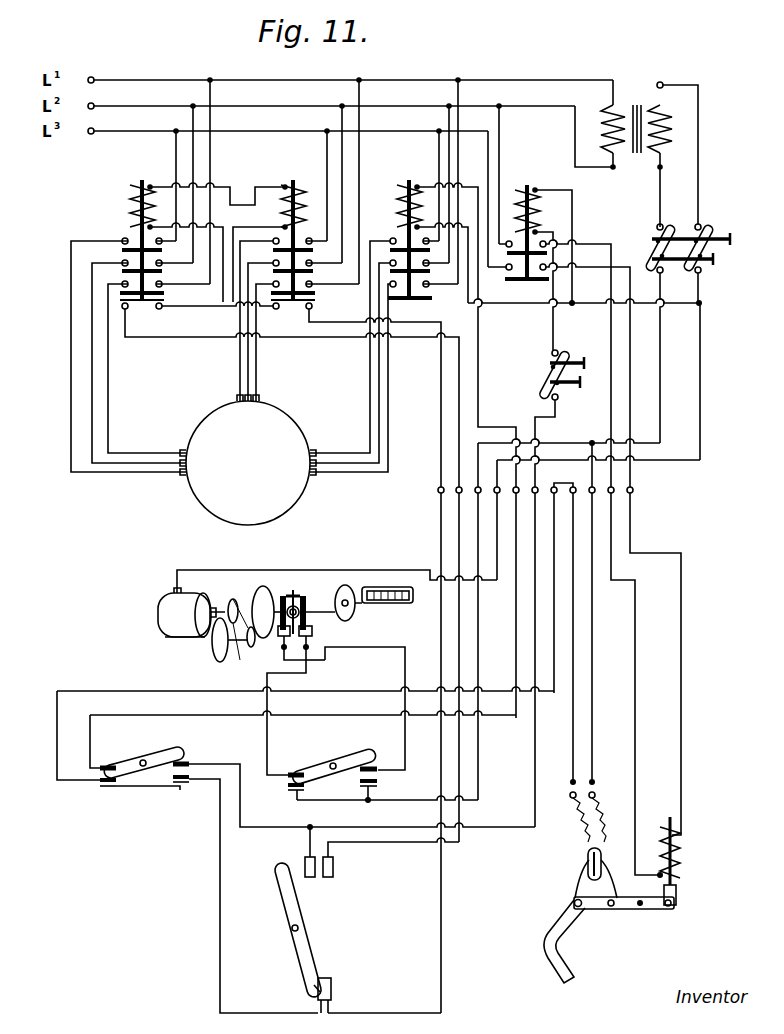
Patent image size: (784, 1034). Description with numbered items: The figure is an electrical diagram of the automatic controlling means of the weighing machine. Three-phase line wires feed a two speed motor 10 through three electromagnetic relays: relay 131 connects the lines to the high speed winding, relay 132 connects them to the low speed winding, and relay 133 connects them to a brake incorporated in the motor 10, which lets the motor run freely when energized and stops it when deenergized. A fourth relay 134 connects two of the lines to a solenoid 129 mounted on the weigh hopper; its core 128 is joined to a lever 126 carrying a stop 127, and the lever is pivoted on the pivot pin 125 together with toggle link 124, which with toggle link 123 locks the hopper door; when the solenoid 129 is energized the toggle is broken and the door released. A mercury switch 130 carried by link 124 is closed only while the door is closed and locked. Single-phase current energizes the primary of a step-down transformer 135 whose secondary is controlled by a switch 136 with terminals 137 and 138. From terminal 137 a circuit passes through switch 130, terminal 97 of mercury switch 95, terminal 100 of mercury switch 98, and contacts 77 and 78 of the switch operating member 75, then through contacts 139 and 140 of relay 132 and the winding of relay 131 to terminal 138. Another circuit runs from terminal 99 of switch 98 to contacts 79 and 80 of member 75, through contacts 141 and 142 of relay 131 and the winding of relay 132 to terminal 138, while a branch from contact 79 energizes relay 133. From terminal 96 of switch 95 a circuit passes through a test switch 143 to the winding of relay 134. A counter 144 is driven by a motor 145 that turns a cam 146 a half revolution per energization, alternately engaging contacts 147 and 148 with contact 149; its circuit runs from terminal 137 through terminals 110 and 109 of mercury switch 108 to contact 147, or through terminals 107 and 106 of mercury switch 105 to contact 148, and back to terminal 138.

The motor 10 is at (248, 460).
The switch operating member 75 is at (290, 920).
The contact 77 is at (320, 985).
The contact 78 is at (331, 986).
The contact 79 is at (310, 877).
The contact 80 is at (328, 877).
The mercury switch 95 is at (108, 755).
The terminal 96 is at (118, 772).
The terminal 97 is at (102, 788).
The mercury switch 98 is at (186, 760).
The terminal 99 is at (170, 778).
The terminal 100 is at (183, 792).
The mercury switch 105 is at (372, 738).
The terminal 106 is at (372, 764).
The terminal 107 is at (378, 786).
The mercury switch 108 is at (290, 770).
The terminal 109 is at (305, 784).
The terminal 110 is at (296, 794).
The toggle link 123 is at (572, 973).
The toggle link 124 is at (575, 888).
The pivot pin 125 is at (608, 908).
The lever 126 is at (670, 908).
The stop 127 is at (642, 908).
The core 128 is at (676, 893).
The solenoid 129 is at (676, 836).
The mercury switch 130 is at (601, 855).
The electromagnetic relay 131 is at (142, 228).
The electromagnetic relay 132 is at (293, 227).
The electromagnetic relay 133 is at (410, 227).
The electromagnetic relay 134 is at (527, 219).
The step-down transformer 135 is at (636, 145).
The switch 136 is at (696, 263).
The terminal 137 is at (650, 279).
The terminal 138 is at (702, 273).
The contact 139 is at (274, 309).
The contact 140 is at (312, 306).
The contact 141 is at (125, 309).
The contact 142 is at (159, 309).
The test switch 143 is at (570, 377).
The counter 144 is at (388, 605).
The motor 145 is at (160, 618).
The cam 146 is at (335, 600).
The contact 147 is at (304, 598).
The contact 148 is at (278, 596).
The contact 149 is at (296, 606).